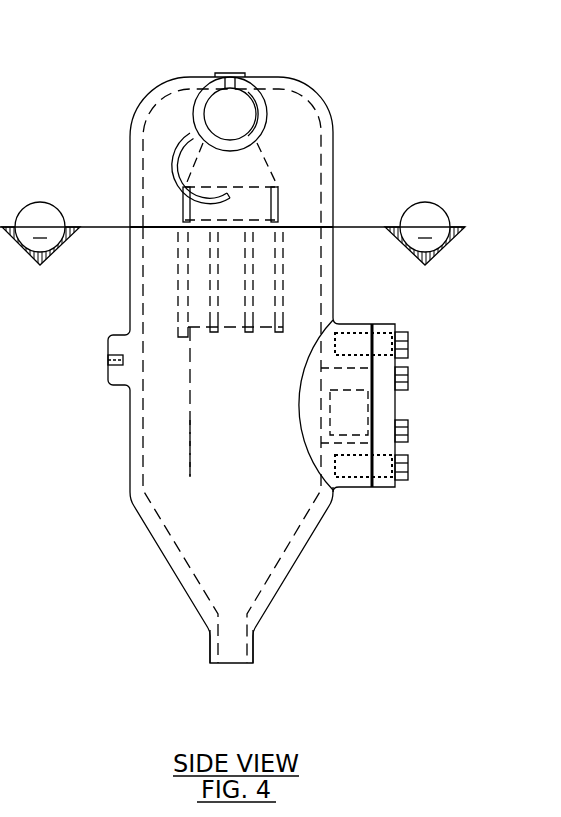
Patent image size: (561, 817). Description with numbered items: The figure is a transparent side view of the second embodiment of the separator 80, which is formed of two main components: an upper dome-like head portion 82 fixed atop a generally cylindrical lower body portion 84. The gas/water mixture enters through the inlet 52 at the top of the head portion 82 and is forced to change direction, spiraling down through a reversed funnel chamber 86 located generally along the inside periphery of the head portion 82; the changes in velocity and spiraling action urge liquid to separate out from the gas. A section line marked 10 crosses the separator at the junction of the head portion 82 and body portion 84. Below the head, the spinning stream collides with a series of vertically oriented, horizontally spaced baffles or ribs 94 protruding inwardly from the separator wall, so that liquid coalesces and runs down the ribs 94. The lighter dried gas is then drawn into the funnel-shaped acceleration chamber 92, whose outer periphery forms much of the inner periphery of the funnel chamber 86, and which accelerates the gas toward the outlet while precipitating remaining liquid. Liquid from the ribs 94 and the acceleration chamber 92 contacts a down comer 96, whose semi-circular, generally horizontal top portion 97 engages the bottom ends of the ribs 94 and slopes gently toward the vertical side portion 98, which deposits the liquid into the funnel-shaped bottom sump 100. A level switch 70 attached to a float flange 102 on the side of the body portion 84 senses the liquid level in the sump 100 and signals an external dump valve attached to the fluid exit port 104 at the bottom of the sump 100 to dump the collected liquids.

The section line 10 is at (232, 233).
The inlet 52 is at (241, 97).
The level switch 70 is at (356, 412).
The separator 80 is at (240, 374).
The upper dome-like head portion 82 is at (334, 143).
The lower body portion 84 is at (130, 487).
The reversed funnel chamber 86 is at (173, 130).
The acceleration chamber 92 is at (241, 208).
The baffles or ribs 94 is at (253, 310).
The down comer 96 is at (190, 393).
The top portion 97 is at (200, 328).
The vertical side portion 98 is at (190, 437).
The bottom sump 100 is at (282, 520).
The float flange 102 is at (385, 488).
The fluid exit port 104 is at (238, 663).